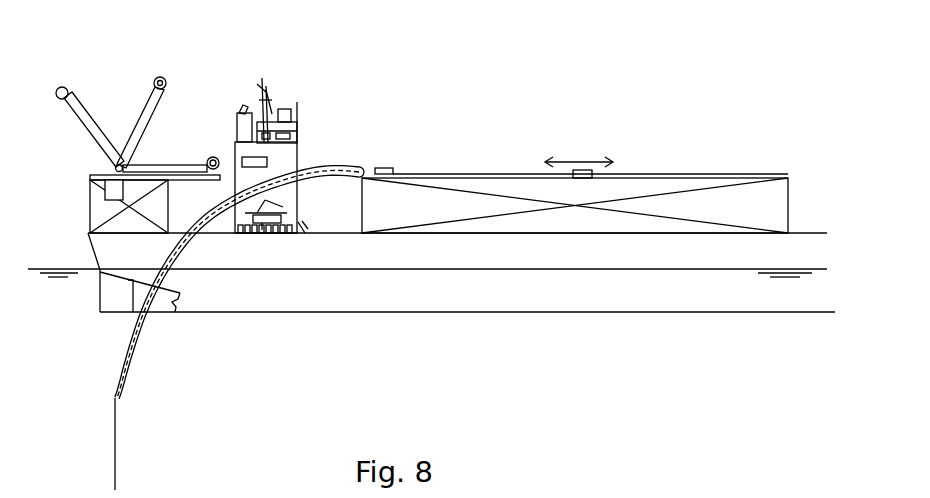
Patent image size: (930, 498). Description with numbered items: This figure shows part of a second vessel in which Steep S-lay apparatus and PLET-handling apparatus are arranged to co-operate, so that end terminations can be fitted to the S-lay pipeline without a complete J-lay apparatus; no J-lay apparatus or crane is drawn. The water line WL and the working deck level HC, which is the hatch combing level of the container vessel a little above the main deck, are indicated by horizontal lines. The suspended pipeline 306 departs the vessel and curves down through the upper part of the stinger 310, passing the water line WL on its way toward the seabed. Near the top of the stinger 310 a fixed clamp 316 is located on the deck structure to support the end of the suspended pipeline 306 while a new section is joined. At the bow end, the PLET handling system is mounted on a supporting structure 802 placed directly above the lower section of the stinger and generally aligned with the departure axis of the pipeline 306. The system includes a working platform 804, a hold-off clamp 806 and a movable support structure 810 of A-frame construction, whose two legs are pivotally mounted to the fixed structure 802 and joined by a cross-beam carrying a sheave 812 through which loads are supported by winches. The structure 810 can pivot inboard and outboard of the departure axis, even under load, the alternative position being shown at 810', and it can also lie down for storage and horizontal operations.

The supporting structure 802 is at (101, 207).
The working platform 804 is at (122, 161).
The hold-off clamp 806 is at (79, 192).
The movable support structure 810 is at (162, 127).
The movable support structure (pivoted position) 810' is at (123, 93).
The sheave 812 is at (206, 69).
The fixed clamp 316 is at (431, 145).
The upper part of stinger 310 is at (115, 362).
The suspended pipeline 306 is at (181, 444).
The water line WL is at (427, 308).
The working deck level HC is at (461, 290).